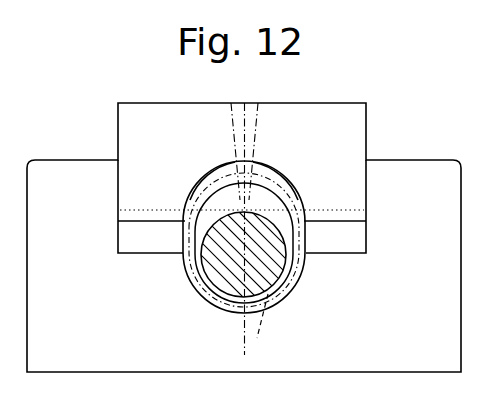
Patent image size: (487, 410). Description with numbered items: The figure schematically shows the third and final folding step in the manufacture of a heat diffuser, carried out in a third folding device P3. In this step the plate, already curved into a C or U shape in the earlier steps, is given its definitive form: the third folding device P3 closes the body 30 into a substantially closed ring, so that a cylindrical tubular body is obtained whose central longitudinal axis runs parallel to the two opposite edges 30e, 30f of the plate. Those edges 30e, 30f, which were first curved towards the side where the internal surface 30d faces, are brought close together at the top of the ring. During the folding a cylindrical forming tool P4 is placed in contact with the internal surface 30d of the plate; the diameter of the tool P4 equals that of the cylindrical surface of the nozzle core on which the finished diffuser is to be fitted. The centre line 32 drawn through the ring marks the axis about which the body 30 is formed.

The third folding device P3 is at (95, 128).
The body 30 is at (301, 262).
The internal surface 30d is at (208, 268).
The opposite edge 30e is at (232, 194).
The opposite edge 30f is at (256, 194).
The cylindrical forming tool P4 is at (261, 267).
The pivot shaft center line 32 is at (256, 232).